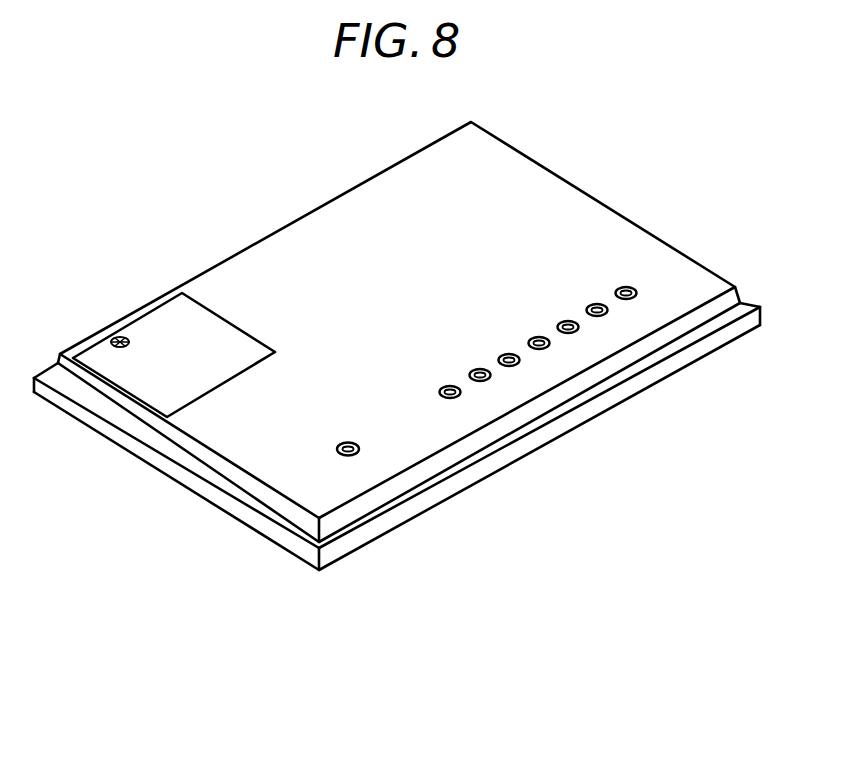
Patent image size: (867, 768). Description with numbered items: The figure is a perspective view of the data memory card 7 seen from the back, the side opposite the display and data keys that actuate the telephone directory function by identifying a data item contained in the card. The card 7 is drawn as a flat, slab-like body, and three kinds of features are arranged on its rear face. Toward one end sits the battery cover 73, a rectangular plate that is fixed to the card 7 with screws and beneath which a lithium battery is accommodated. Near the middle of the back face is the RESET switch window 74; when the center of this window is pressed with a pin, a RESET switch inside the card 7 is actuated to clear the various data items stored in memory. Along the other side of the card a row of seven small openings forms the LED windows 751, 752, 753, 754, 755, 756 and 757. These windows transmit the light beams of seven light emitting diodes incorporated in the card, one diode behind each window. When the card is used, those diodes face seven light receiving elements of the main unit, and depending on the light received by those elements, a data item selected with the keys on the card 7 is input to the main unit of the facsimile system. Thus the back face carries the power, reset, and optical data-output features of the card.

The data memory card 7 is at (551, 183).
The battery cover 73 is at (162, 317).
The RESET switch window 74 is at (346, 442).
The LED window 751 is at (447, 386).
The LED window 752 is at (476, 370).
The LED window 753 is at (505, 355).
The LED window 754 is at (535, 338).
The LED window 755 is at (565, 322).
The LED window 756 is at (593, 305).
The LED window 757 is at (623, 288).